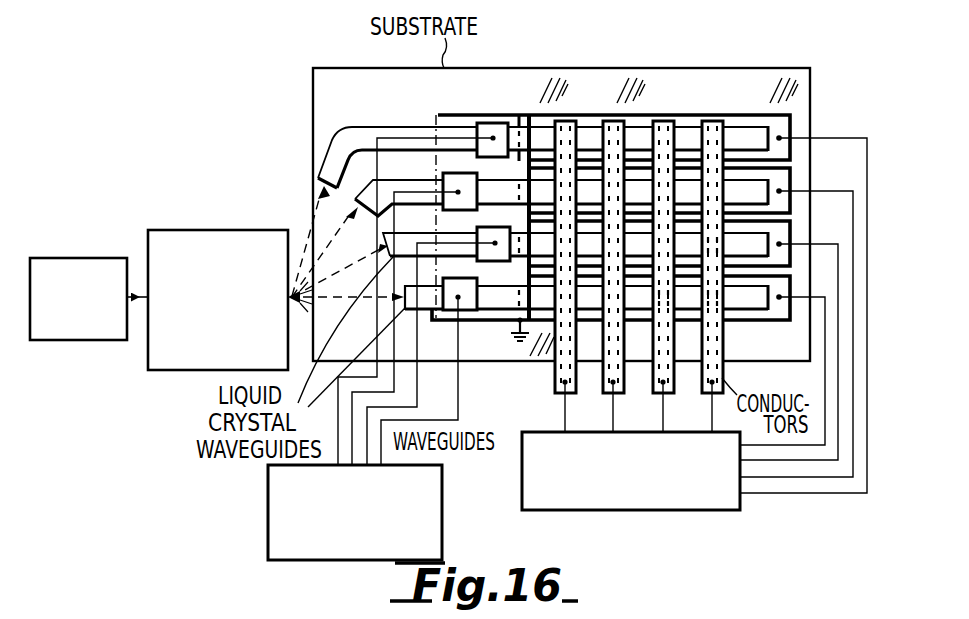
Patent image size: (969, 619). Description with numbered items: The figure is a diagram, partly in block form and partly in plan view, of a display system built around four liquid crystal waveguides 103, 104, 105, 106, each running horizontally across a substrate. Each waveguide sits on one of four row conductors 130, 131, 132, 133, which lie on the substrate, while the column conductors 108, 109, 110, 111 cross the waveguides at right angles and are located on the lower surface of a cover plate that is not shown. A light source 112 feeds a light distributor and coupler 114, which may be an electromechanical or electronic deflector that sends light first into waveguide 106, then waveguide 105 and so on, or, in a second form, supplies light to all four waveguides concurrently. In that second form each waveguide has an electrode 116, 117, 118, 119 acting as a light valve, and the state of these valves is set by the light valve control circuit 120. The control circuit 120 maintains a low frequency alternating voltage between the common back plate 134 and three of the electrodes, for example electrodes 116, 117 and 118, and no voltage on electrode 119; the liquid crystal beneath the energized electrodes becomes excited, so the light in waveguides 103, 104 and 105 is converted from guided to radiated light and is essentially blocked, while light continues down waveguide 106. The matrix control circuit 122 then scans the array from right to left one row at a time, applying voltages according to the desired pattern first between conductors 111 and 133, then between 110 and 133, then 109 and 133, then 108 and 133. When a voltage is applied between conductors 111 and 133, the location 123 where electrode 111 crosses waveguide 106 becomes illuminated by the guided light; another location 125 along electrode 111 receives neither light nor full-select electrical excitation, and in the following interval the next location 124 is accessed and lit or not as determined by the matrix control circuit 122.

The liquid crystal waveguide 103 is at (738, 137).
The liquid crystal waveguide 104 is at (757, 191).
The liquid crystal waveguide 105 is at (786, 243).
The liquid crystal waveguide 106 is at (757, 295).
The column conductor 108 is at (557, 386).
The column conductor 109 is at (607, 384).
The column conductor 110 is at (657, 384).
The column conductor 111 is at (705, 384).
The light source 112 is at (78, 258).
The light distributor and coupler 114 is at (216, 230).
The electrode 116 is at (486, 124).
The electrode 117 is at (477, 188).
The electrode 118 is at (486, 252).
The electrode 119 is at (467, 309).
The light valve control circuit 120 is at (268, 503).
The matrix control circuit 122 is at (666, 510).
The matrix location 123 is at (731, 306).
The matrix location 124 is at (652, 300).
The matrix location 125 is at (714, 244).
The row conductor 130 is at (786, 116).
The row conductor 131 is at (793, 164).
The row conductor 132 is at (785, 229).
The row conductor 133 is at (782, 313).
The common back plate 134 is at (437, 115).